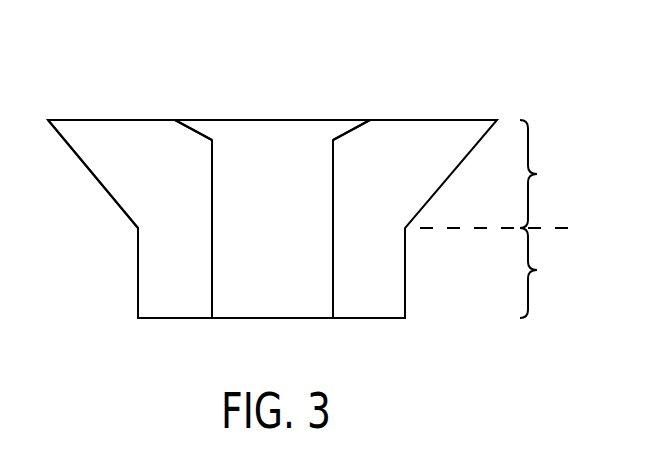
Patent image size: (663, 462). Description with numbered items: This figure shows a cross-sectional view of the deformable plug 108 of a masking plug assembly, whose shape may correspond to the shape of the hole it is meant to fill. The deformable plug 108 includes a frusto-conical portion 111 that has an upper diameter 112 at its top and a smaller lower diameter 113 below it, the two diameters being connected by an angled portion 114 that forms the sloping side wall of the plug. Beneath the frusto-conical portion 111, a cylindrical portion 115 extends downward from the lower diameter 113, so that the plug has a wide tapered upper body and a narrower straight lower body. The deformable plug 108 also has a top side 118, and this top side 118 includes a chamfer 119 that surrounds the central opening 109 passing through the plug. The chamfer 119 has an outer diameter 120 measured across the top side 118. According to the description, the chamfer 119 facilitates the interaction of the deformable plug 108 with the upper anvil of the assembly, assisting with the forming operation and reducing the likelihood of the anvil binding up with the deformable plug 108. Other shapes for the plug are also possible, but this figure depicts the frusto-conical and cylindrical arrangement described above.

The deformable plug 108 is at (105, 253).
The central opening 109 is at (312, 302).
The frusto-conical portion 111 is at (544, 174).
The upper diameter 112 is at (497, 46).
The lower diameter 113 is at (405, 228).
The angled portion 114 is at (103, 188).
The cylindrical portion 115 is at (544, 273).
The top side 118 is at (415, 120).
The chamfer 119 is at (190, 127).
The outer diameter 120 is at (372, 83).